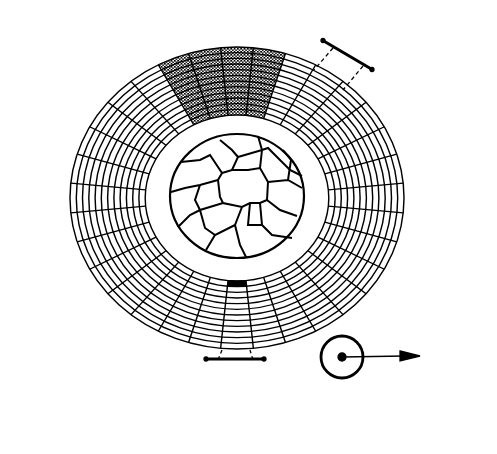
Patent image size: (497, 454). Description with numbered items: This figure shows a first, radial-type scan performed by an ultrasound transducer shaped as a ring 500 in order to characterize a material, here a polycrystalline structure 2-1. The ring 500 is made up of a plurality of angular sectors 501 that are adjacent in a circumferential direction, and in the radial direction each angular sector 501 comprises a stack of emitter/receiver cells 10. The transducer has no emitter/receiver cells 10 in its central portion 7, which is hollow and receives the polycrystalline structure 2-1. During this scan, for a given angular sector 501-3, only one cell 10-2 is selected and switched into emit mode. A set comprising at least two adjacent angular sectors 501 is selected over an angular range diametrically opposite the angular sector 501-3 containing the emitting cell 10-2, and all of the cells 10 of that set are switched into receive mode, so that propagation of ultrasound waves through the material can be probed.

The ring 500 is at (106, 65).
The angular sector 501 is at (348, 54).
The emitter/receiver cell 10 is at (378, 128).
The polycrystalline structure 2-1 is at (187, 177).
The central portion 7 is at (157, 208).
The cell in emit mode 10-2 is at (226, 283).
The angular sector for emission 501-3 is at (235, 367).